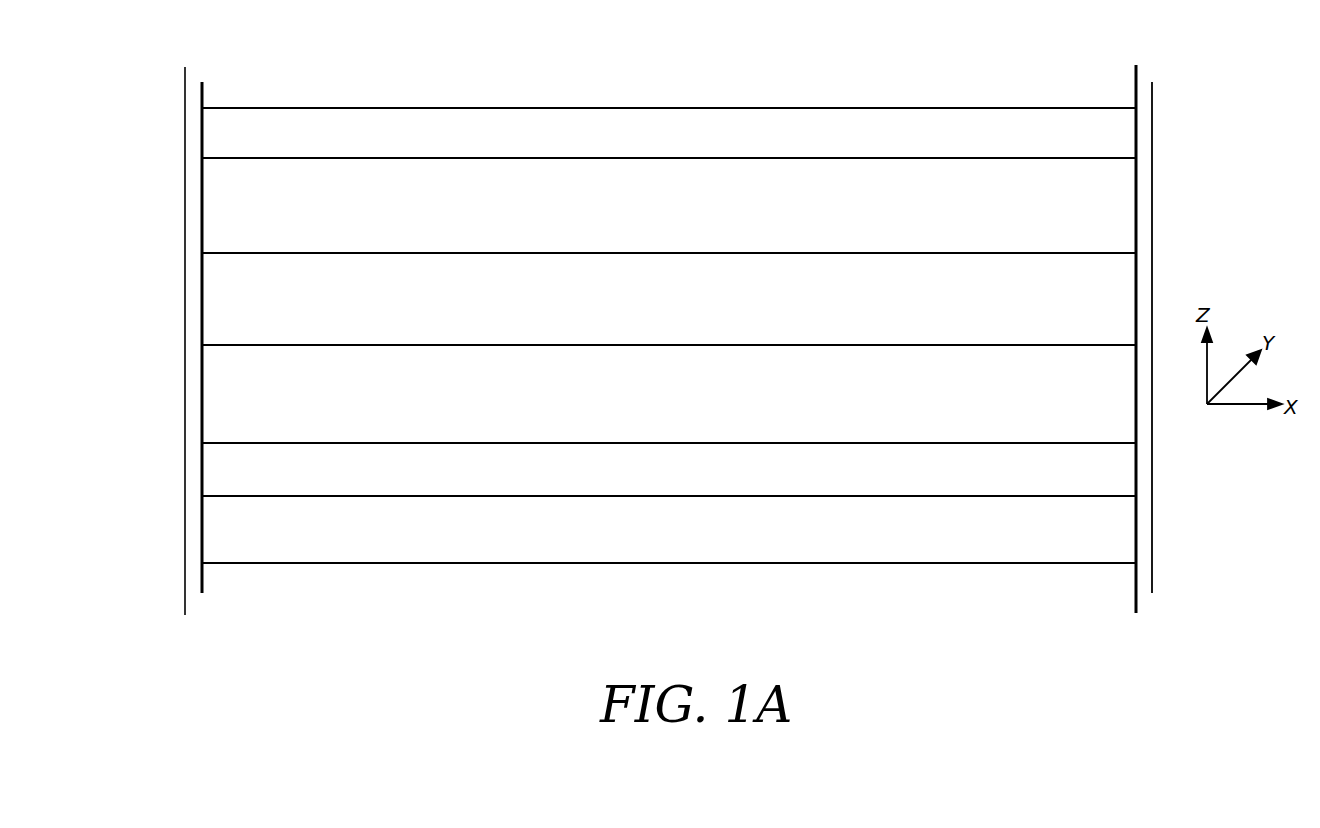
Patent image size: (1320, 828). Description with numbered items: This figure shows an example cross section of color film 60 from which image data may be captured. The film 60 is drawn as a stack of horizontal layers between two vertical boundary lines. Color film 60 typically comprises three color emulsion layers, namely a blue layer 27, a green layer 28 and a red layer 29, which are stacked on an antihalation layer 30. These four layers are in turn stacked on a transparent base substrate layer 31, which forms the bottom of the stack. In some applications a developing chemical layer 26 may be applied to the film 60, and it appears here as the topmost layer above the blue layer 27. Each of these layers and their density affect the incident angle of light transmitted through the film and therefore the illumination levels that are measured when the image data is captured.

The developing chemical layer 26 is at (226, 141).
The blue layer 27 is at (229, 217).
The green layer 28 is at (226, 312).
The red layer 29 is at (223, 396).
The antihalation layer 30 is at (216, 478).
The transparent base substrate layer 31 is at (223, 535).
The color film 60 is at (1213, 168).